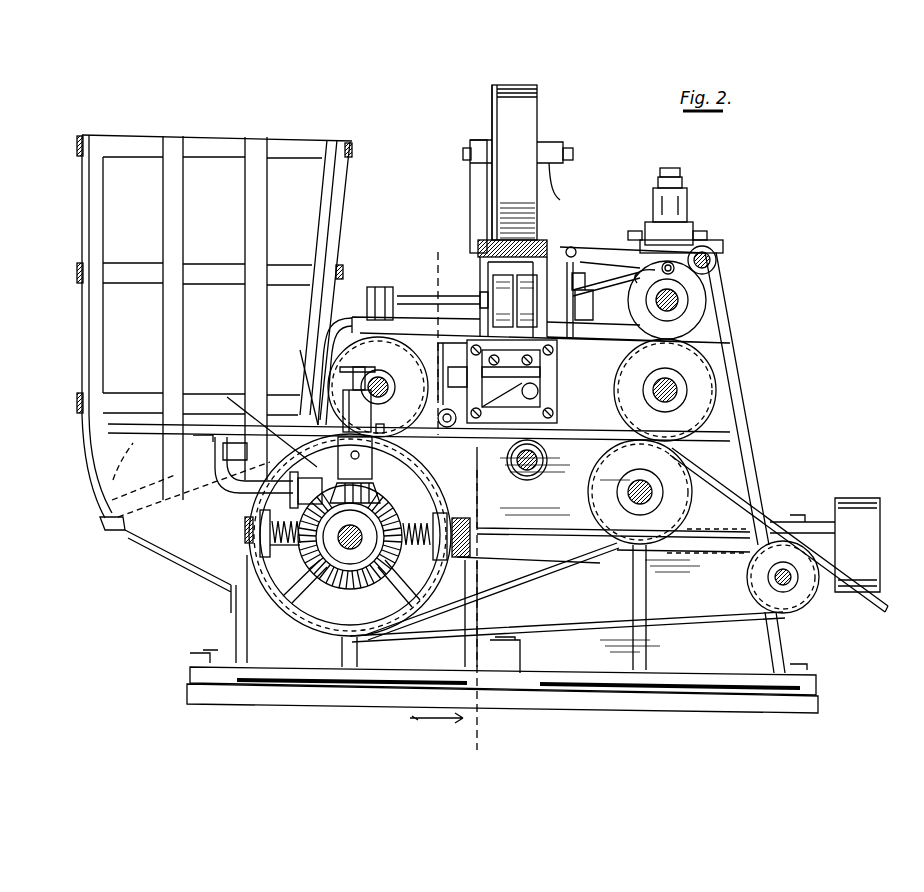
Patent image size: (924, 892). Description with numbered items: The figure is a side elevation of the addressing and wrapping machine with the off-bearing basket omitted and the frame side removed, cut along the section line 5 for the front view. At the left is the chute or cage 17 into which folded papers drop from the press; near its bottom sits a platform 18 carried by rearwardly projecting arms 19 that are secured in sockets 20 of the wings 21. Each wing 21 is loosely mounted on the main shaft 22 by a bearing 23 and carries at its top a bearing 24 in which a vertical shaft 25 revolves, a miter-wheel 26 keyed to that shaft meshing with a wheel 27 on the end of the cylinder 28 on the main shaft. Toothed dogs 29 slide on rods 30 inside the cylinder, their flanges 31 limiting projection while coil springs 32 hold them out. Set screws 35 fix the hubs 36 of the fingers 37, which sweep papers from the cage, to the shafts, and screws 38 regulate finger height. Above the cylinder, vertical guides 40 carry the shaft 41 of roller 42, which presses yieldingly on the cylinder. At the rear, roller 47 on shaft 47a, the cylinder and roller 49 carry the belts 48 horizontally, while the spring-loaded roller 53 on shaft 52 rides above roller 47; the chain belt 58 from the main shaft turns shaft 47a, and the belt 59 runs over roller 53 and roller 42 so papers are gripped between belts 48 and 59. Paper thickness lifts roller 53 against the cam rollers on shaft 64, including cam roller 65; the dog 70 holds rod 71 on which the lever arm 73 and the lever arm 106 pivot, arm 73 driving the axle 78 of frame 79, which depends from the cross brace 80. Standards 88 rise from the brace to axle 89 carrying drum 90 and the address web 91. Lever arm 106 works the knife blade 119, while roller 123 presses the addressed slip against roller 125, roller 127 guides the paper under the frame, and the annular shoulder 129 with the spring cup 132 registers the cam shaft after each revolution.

The section line 5— 5 is at (443, 498).
The chute or cage 17 is at (100, 344).
The platform 18 is at (123, 433).
The arms 19 is at (233, 488).
The sockets 20 is at (310, 495).
The wings 21 is at (227, 397).
The main shaft 22 is at (348, 547).
The bearing 23 is at (356, 564).
The bearings 24 is at (372, 465).
The shafts 25 is at (380, 512).
The miter-wheels 26 is at (380, 490).
The wheels 27 is at (383, 577).
The cylinder 28 is at (440, 507).
The toothed dogs 29 is at (247, 529).
The rods 30 is at (267, 527).
The flanges 31 is at (271, 551).
The coil springs 32 is at (310, 570).
The set screws 35 is at (383, 427).
The hubs 36 is at (357, 399).
The fingers 37 is at (300, 422).
The screws 38 is at (378, 387).
The vertical guides 40 is at (357, 328).
The shaft 41 is at (352, 378).
The roller 42 is at (348, 386).
The roller 47 is at (640, 492).
The shaft 47a is at (665, 495).
The belts 48 is at (735, 500).
The roller 49 is at (792, 584).
The shaft 52 is at (677, 390).
The roller 53 is at (665, 390).
The chain belt 58 is at (547, 570).
The belt 59 is at (600, 340).
The shaft 64 is at (678, 300).
The cam roller 65 is at (700, 291).
The dog 70 is at (716, 262).
The rod 71 is at (723, 246).
The lever arm 73 is at (623, 279).
The axle 78 is at (480, 301).
The frame 79 is at (488, 286).
The cross brace 80 is at (548, 240).
The standards 88 is at (470, 191).
The axle 89 is at (463, 153).
The drum 90 is at (494, 96).
The web 91 is at (513, 95).
The lever arm 106 is at (592, 253).
The blade 119 is at (511, 387).
The roller 123 is at (522, 397).
The roller 125 is at (533, 466).
The roller 127 is at (468, 340).
The annular shoulder 129 is at (521, 470).
The cup 132 is at (688, 207).